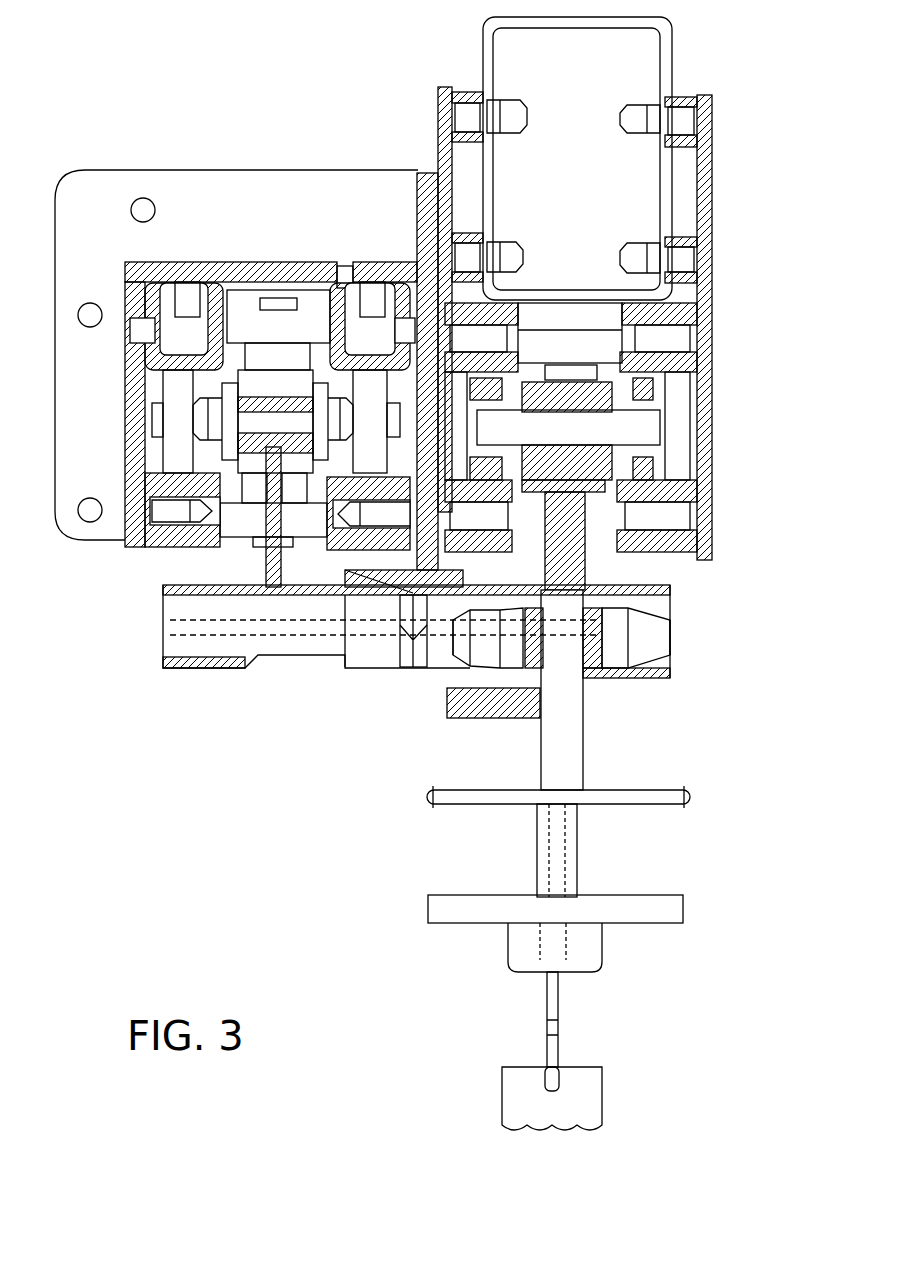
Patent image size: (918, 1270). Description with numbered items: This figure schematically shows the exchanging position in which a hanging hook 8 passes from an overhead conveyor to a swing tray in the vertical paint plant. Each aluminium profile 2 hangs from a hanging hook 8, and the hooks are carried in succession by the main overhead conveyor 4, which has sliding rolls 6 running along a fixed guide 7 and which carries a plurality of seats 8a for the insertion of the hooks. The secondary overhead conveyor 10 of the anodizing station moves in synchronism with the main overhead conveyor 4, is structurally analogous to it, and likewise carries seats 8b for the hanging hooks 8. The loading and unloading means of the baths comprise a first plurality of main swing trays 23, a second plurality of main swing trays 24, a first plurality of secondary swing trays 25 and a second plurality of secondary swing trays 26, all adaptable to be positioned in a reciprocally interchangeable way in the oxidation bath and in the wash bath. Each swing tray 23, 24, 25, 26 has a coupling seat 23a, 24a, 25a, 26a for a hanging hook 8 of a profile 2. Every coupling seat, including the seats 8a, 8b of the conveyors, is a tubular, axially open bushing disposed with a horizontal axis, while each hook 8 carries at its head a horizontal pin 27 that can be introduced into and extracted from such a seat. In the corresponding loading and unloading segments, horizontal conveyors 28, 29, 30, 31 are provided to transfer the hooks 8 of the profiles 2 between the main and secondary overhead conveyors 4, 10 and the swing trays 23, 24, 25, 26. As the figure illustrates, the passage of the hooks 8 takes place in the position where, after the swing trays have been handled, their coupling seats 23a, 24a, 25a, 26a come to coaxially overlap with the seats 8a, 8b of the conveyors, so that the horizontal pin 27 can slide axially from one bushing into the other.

The aluminium profile 2 is at (528, 1107).
The main overhead conveyor 4 is at (246, 414).
The secondary overhead conveyor 10 is at (233, 547).
The sliding roll 6 is at (280, 320).
The fixed guide 7 is at (195, 267).
The hanging hook 8 is at (548, 757).
The seat of main conveyor 8a is at (394, 678).
The seat of secondary conveyor 8b is at (210, 667).
The first main swing tray 23 is at (625, 288).
The second main swing tray 24 is at (625, 288).
The first secondary swing tray 25 is at (625, 288).
The second secondary swing tray 26 is at (710, 410).
The coupling seat of first main swing tray 23a is at (603, 698).
The coupling seat of second main swing tray 24a is at (603, 698).
The coupling seat of first secondary swing tray 25a is at (603, 698).
The coupling seat of second secondary swing tray 26a is at (670, 682).
The horizontal pin 27 is at (657, 637).
The horizontal conveyor 28 is at (388, 720).
The horizontal conveyor 29 is at (388, 720).
The horizontal conveyor 30 is at (388, 720).
The horizontal conveyor 31 is at (450, 702).